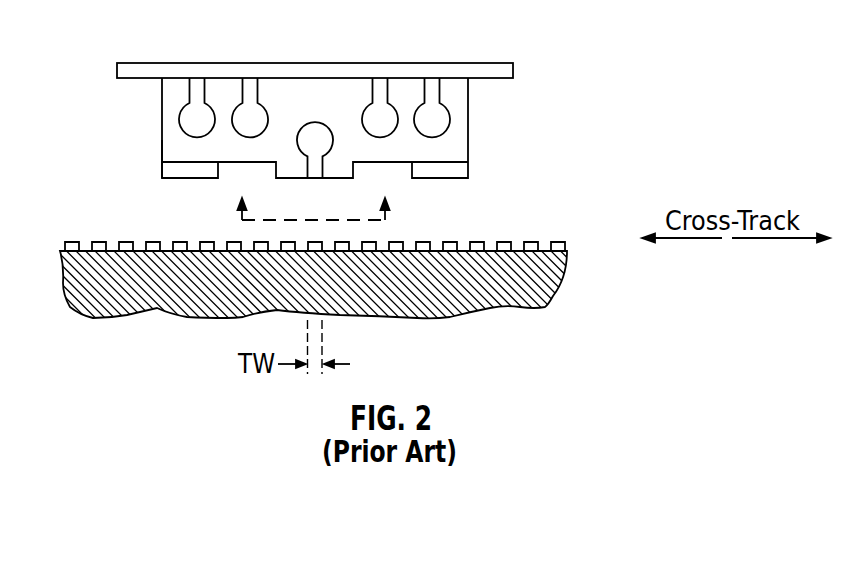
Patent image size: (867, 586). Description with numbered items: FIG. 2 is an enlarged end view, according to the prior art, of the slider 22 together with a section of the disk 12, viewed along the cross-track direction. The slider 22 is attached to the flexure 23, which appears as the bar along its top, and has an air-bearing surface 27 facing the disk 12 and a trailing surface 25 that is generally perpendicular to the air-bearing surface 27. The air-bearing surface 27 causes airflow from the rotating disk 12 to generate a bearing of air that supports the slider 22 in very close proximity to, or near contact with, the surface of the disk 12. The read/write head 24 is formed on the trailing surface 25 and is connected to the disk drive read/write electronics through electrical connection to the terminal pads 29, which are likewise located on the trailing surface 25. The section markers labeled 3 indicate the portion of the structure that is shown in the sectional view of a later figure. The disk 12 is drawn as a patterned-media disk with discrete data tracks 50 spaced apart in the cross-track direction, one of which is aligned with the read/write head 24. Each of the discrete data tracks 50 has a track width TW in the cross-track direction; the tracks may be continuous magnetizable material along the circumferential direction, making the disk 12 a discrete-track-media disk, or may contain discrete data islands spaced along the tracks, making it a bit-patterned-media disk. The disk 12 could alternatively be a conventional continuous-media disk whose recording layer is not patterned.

The disk 12 is at (552, 282).
The slider 22 is at (468, 150).
The flexure 23 is at (498, 63).
The read/write head 24 is at (313, 126).
The trailing surface 25 is at (175, 148).
The air-bearing surface 27 is at (190, 180).
The terminal pads 29 is at (235, 118).
The discrete data tracks 50 is at (97, 242).
The section line for FIG. 3 is at (313, 193).